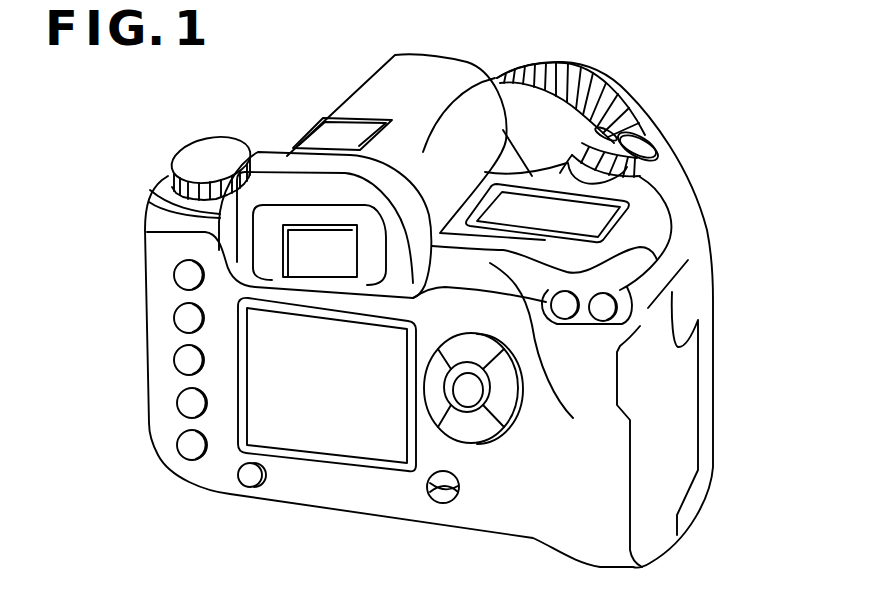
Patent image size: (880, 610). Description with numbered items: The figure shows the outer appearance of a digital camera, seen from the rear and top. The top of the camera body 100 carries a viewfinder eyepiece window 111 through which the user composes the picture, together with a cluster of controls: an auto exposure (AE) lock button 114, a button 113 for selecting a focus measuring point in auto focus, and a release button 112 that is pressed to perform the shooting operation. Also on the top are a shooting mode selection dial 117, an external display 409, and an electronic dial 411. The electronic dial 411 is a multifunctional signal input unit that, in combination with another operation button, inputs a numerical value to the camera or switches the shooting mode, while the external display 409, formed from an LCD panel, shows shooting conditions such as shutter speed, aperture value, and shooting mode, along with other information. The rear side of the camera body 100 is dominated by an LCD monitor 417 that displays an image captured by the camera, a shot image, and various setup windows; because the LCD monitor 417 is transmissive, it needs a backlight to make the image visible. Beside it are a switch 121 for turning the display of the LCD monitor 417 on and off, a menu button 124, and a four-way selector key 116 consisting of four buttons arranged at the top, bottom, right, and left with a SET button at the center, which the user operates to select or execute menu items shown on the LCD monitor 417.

The camera body 100 is at (133, 194).
The viewfinder eyepiece window 111 is at (318, 235).
The release button 112 is at (643, 147).
The button for selecting a focus measuring point 113 is at (603, 312).
The auto exposure (AE) lock button 114 is at (565, 306).
The four-way selector key 116 is at (470, 433).
The shooting mode selection dial 117 is at (200, 153).
The switch 121 is at (190, 452).
The menu button 124 is at (185, 273).
The external display 409 is at (580, 213).
The electronic dial 411 is at (622, 132).
The LCD monitor 417 is at (313, 427).